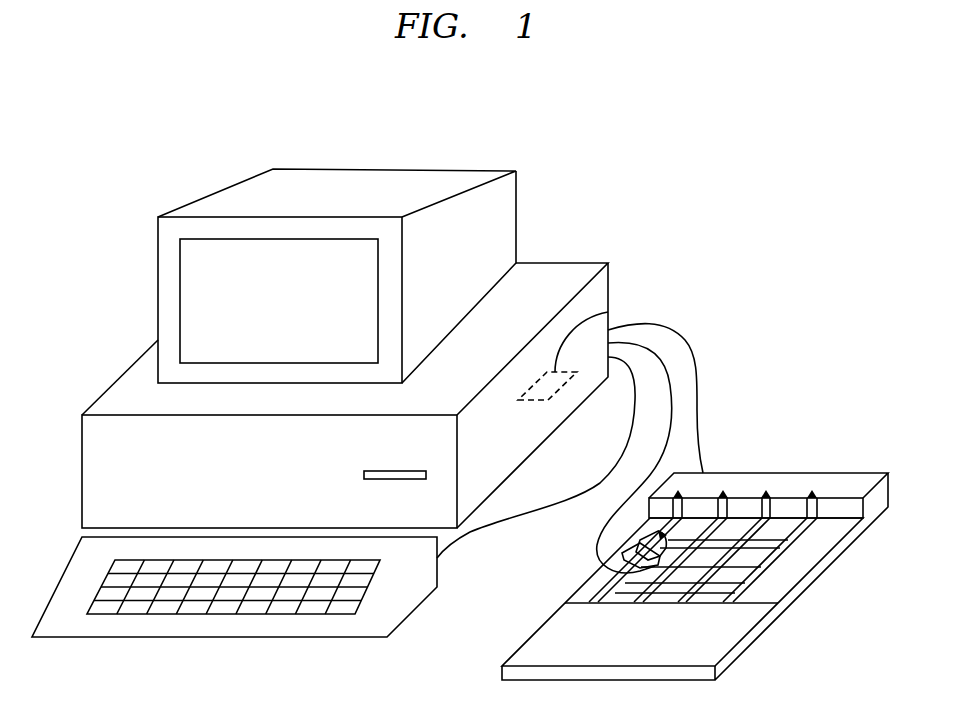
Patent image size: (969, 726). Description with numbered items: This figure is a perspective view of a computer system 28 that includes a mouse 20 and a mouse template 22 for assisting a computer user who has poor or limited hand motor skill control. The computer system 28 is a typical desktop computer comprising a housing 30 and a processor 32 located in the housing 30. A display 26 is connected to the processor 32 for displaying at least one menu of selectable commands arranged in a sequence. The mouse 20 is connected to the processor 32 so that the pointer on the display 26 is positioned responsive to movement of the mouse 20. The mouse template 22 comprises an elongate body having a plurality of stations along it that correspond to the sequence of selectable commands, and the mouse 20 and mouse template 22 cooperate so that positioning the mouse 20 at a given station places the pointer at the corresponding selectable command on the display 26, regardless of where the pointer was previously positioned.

The mouse 20 is at (636, 552).
The mouse template 22 is at (872, 473).
The display 26 is at (306, 169).
The computer system 28 is at (624, 169).
The housing 30 is at (608, 278).
The processor 32 is at (608, 312).